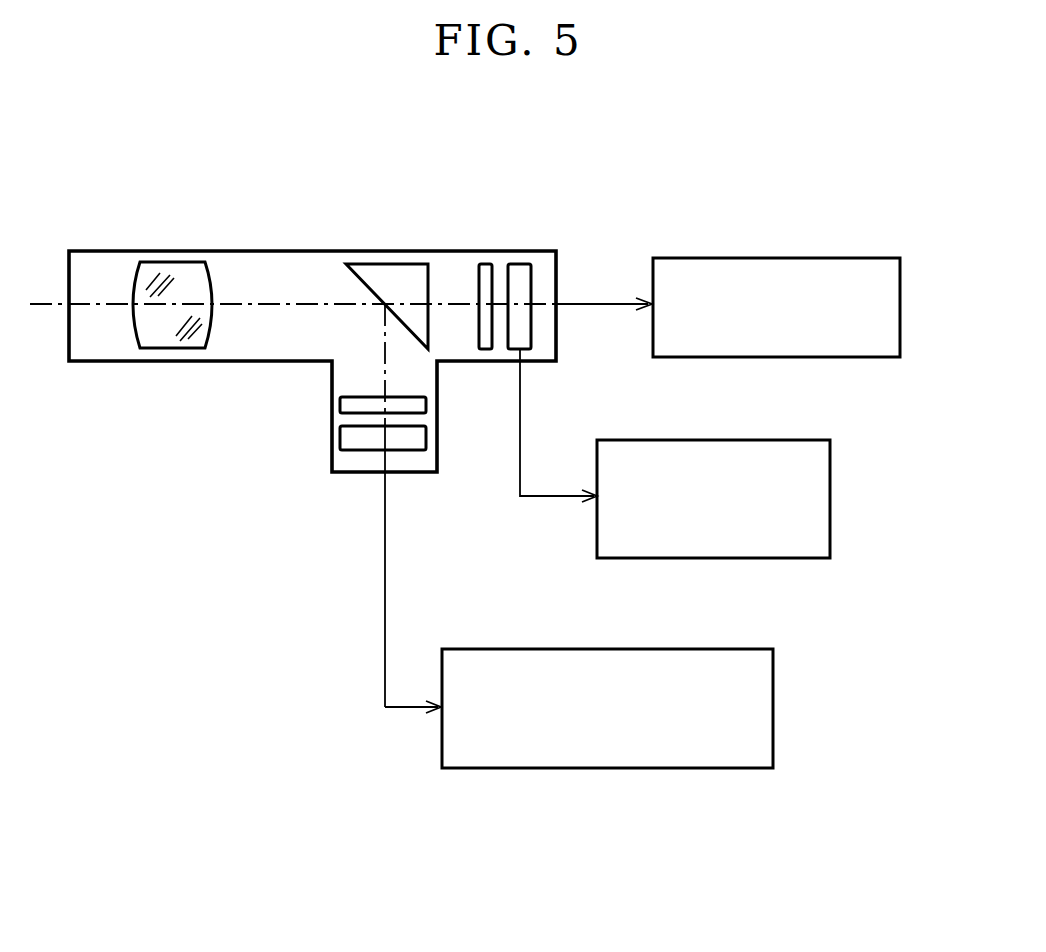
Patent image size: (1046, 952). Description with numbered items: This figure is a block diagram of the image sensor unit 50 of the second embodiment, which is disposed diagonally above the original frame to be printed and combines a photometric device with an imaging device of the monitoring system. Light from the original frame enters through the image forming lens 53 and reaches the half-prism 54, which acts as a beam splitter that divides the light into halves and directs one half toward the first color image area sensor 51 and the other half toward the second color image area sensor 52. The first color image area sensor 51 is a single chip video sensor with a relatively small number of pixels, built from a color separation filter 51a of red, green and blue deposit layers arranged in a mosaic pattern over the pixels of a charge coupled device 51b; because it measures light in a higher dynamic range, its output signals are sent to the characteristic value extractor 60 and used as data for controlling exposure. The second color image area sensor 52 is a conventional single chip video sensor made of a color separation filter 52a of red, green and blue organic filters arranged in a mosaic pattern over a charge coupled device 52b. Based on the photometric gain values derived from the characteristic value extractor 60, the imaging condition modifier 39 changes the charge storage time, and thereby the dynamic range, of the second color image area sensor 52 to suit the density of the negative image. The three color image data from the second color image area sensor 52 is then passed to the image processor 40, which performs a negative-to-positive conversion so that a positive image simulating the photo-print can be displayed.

The image sensor unit 50 is at (255, 222).
The image forming lens 53 is at (176, 262).
The half-prism 54 is at (393, 264).
The second color image area sensor 52 is at (442, 164).
The color separation filter 52a is at (486, 264).
The charge coupled device (CCD) 52b is at (521, 264).
The first color image area sensor 51 is at (215, 370).
The color separation filter 51a is at (340, 405).
The charge coupled device (CCD) 51b is at (340, 438).
The image processor 40 is at (785, 258).
The imaging condition modifier 39 is at (712, 440).
The characteristic value extractor 60 is at (615, 768).